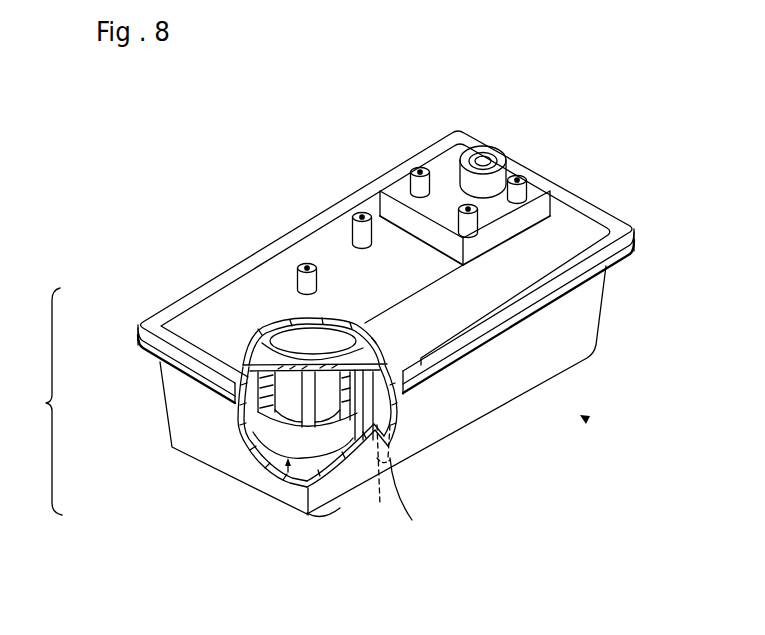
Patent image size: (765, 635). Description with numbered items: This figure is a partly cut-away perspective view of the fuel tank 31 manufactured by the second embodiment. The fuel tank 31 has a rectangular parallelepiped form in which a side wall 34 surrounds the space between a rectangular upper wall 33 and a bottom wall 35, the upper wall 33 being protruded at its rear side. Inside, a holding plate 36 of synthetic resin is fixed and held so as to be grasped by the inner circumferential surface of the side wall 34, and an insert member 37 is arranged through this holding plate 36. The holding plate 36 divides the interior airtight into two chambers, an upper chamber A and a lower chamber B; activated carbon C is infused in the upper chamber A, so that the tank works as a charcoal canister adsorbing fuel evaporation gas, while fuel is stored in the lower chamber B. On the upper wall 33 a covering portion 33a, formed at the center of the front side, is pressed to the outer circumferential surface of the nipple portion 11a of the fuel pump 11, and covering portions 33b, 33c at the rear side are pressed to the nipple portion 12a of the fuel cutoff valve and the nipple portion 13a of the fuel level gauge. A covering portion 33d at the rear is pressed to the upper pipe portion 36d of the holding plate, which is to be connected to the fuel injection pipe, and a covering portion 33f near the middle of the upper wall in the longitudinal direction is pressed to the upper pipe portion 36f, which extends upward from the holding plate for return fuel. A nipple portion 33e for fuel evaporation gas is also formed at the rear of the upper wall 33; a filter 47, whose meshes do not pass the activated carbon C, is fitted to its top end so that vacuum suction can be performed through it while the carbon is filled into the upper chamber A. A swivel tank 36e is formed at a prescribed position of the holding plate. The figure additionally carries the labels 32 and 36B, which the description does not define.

The fuel pump 11 is at (338, 436).
The nipple portion 11a is at (304, 268).
The nipple portion 12a is at (420, 171).
The nipple portion 13a is at (468, 208).
The fuel tank 31 is at (583, 418).
The case 32 is at (37, 401).
The upper wall 33 is at (222, 290).
The covering portion 33a is at (232, 297).
The covering portion 33b is at (410, 187).
The covering portion 33c is at (483, 236).
The covering portion 33d is at (503, 155).
The nipple portion 33e is at (474, 222).
The covering portion 33f is at (360, 233).
The side wall 34 is at (177, 405).
The bottom wall 35 is at (292, 504).
The holding plate 36 is at (375, 470).
The hidden sleeve portion 36B is at (390, 503).
The upper pipe portion 36d is at (490, 160).
The swivel tank 36e is at (341, 435).
The upper pipe portion 36f is at (361, 218).
The insert member 37 is at (272, 462).
The filter 47 is at (518, 178).
The upper chamber A is at (380, 358).
The lower chamber B is at (288, 468).
The activated carbon C is at (370, 330).